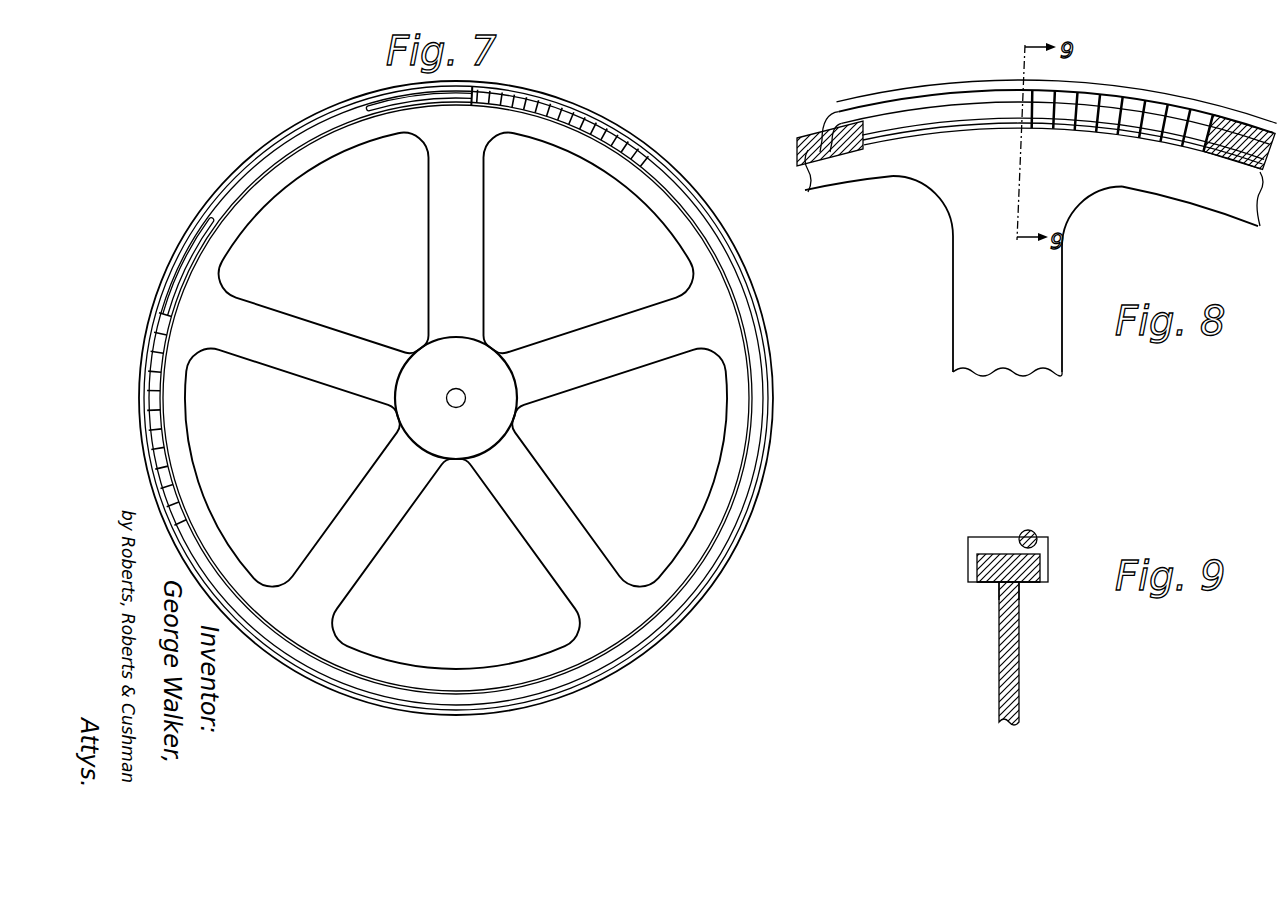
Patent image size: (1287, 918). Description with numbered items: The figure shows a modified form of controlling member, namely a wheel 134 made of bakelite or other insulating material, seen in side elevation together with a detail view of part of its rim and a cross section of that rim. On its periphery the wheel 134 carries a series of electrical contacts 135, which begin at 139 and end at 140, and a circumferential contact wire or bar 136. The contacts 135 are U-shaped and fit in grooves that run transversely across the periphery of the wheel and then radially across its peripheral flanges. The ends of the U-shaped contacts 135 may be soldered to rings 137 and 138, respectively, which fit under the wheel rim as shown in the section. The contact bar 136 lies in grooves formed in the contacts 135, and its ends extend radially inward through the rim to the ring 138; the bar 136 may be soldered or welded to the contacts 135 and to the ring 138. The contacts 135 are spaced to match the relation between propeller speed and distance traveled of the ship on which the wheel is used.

In FIG. 7, the wheel 134 is at (725, 503).
In FIG. 8, the wheel 134 is at (1000, 372).
In FIG. 9, the wheel 134 is at (1003, 682).
In FIG. 7, the electrical contacts 135 is at (597, 118).
In FIG. 8, the electrical contacts 135 is at (1258, 132).
In FIG. 9, the electrical contacts 135 is at (1045, 548).
In FIG. 7, the contact bar 136 is at (363, 100).
In FIG. 8, the contact bar 136 is at (855, 100).
In FIG. 9, the contact bar 136 is at (1032, 530).
In FIG. 9, the ring 137 is at (982, 583).
In FIG. 7, the ring 138 is at (693, 575).
In FIG. 8, the ring 138 is at (900, 140).
In FIG. 9, the ring 138 is at (1028, 585).
In FIG. 7, the beginning of contact series 139 is at (480, 92).
In FIG. 7, the end of contact series 140 is at (168, 310).